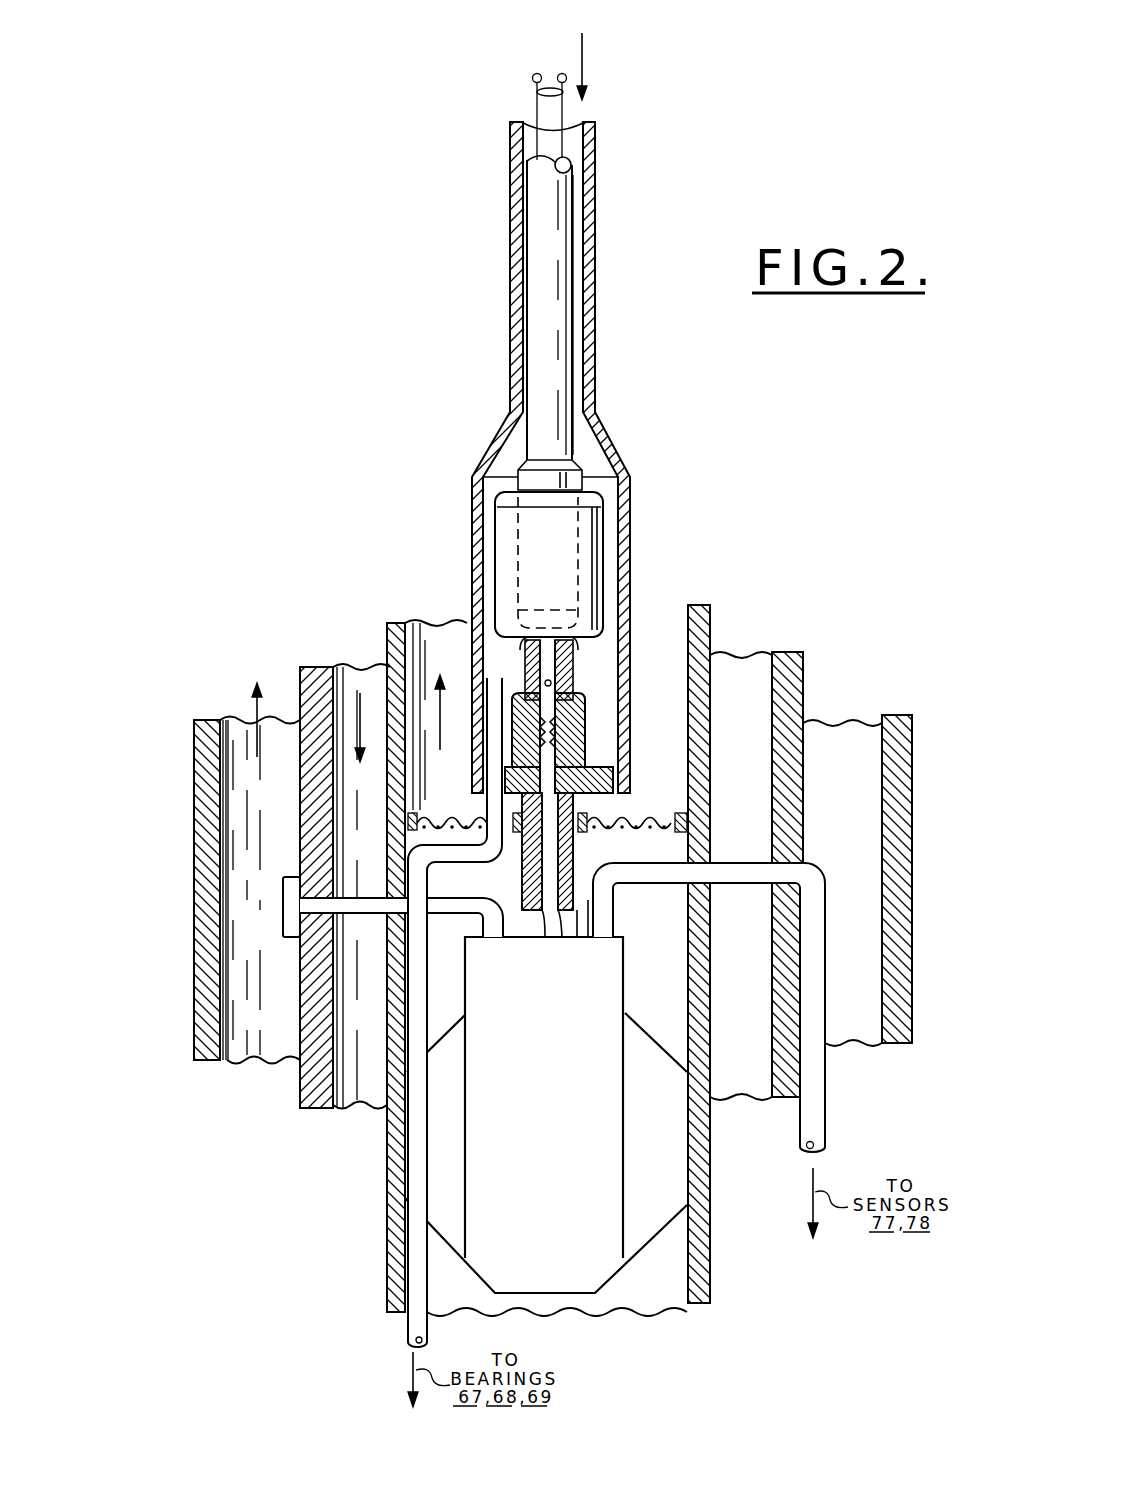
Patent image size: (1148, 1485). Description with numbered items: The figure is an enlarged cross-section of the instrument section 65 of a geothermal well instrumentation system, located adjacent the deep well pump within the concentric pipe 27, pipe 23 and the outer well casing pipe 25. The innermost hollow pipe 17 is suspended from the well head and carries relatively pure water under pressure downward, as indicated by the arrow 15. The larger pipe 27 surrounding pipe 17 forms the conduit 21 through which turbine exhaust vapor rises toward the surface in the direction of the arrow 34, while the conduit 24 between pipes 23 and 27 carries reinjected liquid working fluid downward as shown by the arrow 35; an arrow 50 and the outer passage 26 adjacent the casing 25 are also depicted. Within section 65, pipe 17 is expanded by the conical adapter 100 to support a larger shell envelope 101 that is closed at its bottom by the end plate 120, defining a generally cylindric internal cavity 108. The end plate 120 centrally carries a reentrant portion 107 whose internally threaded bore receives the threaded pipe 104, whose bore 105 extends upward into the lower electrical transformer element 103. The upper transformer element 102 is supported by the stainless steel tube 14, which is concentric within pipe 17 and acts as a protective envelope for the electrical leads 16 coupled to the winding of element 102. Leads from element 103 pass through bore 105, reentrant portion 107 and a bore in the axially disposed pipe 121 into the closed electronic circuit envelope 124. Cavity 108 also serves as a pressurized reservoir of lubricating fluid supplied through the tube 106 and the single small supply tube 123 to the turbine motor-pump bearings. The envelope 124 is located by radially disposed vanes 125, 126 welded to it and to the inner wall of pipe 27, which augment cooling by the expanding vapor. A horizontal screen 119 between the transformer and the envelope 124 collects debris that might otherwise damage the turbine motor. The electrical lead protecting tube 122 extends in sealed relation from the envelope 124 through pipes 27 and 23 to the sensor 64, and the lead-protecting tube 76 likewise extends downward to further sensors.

The tube 14 is at (535, 248).
The arrow 15 is at (585, 74).
The electrical leads 16 is at (537, 92).
The pipe 17 is at (595, 162).
The conduit 21 is at (438, 622).
The pipe 23 is at (345, 665).
The conduit 24 is at (350, 835).
The well casing pipe 25 is at (236, 712).
The outer passage 26 is at (236, 885).
The pipe 27 is at (415, 622).
The arrow 34 is at (443, 736).
The arrow 35 is at (354, 760).
The flow path 50 is at (258, 684).
The sensor 64 is at (284, 938).
The instrument section 65 is at (792, 545).
The electrical lead-protecting tube 76 is at (613, 916).
The conical adapter 100 is at (610, 452).
The shell envelope 101 is at (630, 507).
The transformer element 102 is at (473, 528).
The transformer element 103 is at (603, 543).
The threaded pipe 104 is at (580, 648).
The bore 105 is at (562, 688).
The tube 106 is at (473, 650).
The reentrant portion 107 is at (590, 729).
The internal cavity 108 is at (632, 603).
The horizontal screen 119 is at (600, 833).
The end plate 120 is at (592, 771).
The pipe 121 is at (578, 801).
The electrical lead protecting tube 122 is at (450, 898).
The supply tube 123 is at (430, 963).
The electronic circuit envelope 124 is at (615, 998).
The vane 125 is at (425, 1152).
The vane 126 is at (687, 1170).